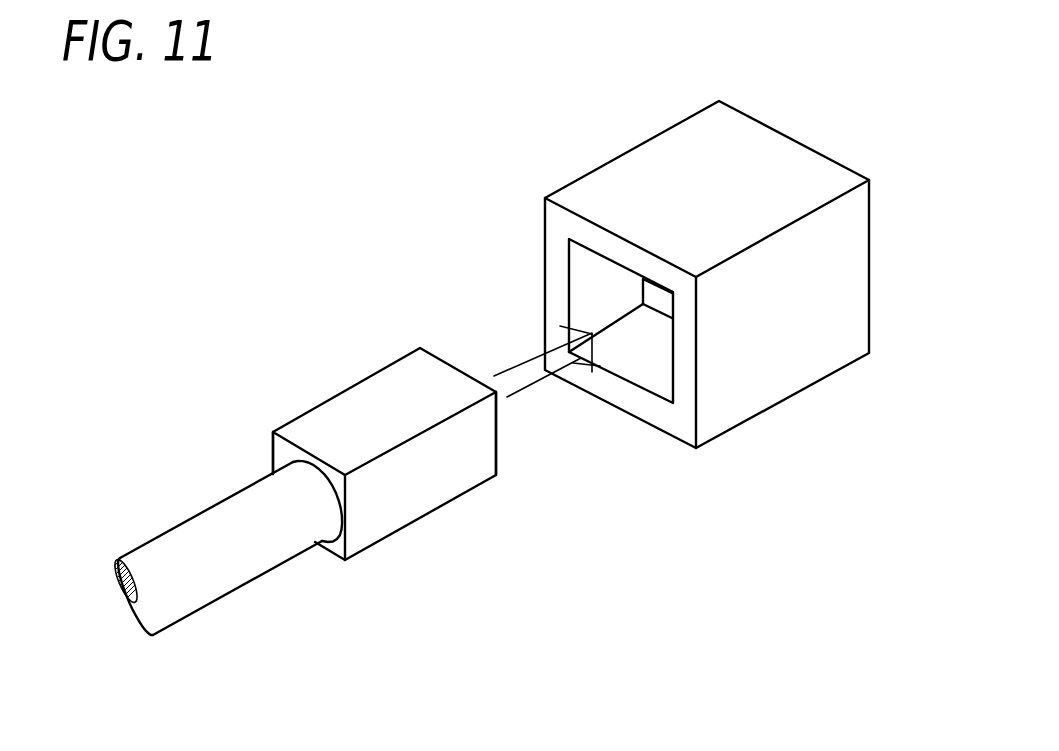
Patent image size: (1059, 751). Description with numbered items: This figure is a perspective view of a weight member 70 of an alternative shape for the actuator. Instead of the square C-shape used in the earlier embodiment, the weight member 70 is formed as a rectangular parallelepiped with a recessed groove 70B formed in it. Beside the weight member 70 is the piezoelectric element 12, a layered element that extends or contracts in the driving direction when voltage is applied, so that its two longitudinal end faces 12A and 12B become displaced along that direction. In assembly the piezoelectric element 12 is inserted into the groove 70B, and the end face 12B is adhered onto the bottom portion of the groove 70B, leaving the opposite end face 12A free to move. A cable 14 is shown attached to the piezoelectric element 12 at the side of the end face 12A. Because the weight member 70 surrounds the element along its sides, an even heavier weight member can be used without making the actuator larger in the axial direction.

The piezoelectric element 12 is at (370, 390).
The end face 12A is at (280, 452).
The end face 12B is at (454, 368).
The optical fiber cable 14 is at (217, 523).
The weight member 70 is at (622, 146).
The recessed groove 70B is at (645, 338).